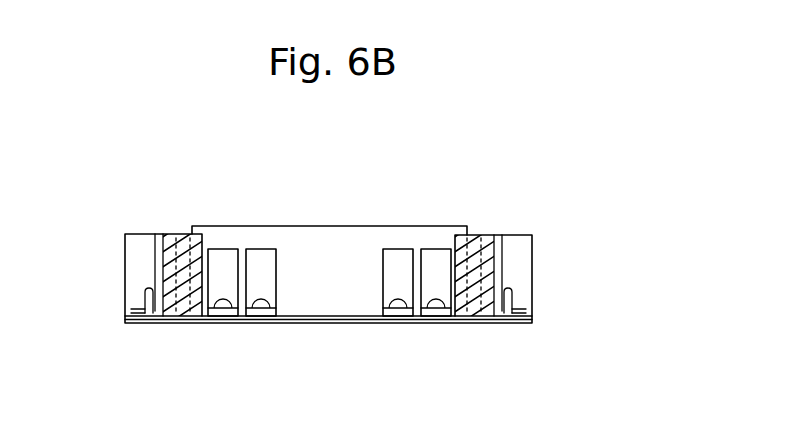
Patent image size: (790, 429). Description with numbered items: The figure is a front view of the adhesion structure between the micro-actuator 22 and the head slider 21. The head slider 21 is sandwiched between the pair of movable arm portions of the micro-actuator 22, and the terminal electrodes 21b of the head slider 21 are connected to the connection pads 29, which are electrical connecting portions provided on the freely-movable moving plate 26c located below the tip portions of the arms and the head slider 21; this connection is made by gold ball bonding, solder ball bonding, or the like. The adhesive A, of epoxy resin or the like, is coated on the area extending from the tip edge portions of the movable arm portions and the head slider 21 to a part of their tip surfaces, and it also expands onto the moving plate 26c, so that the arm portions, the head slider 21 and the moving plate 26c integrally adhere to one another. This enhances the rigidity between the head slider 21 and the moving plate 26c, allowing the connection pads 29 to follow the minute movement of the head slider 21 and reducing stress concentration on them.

The head slider 21 is at (354, 214).
The terminal electrodes 21b is at (263, 249).
The micro-actuator 22 is at (545, 258).
The connection pads 29 is at (259, 318).
The moving plate 26c is at (517, 324).
The adhesive A is at (143, 303).